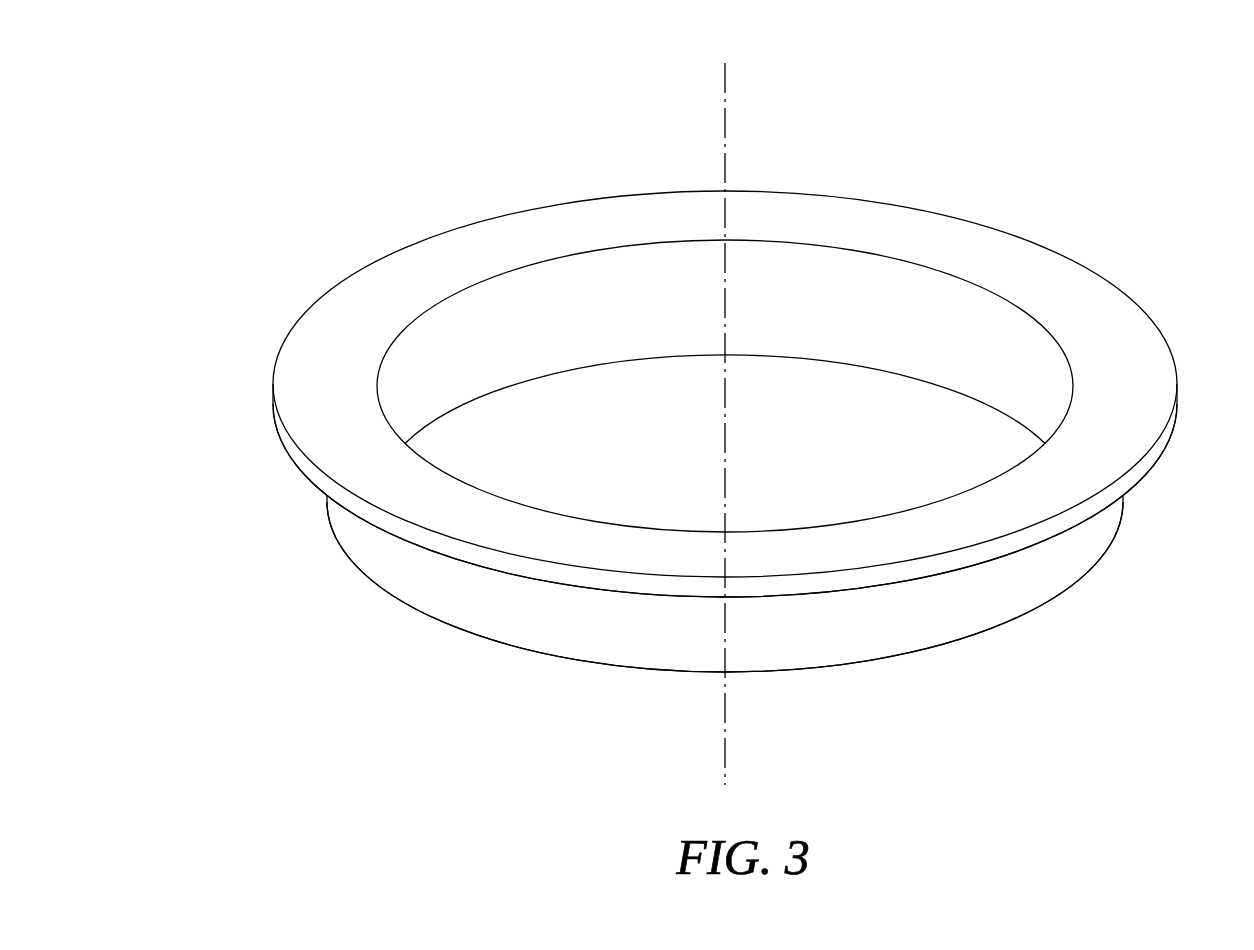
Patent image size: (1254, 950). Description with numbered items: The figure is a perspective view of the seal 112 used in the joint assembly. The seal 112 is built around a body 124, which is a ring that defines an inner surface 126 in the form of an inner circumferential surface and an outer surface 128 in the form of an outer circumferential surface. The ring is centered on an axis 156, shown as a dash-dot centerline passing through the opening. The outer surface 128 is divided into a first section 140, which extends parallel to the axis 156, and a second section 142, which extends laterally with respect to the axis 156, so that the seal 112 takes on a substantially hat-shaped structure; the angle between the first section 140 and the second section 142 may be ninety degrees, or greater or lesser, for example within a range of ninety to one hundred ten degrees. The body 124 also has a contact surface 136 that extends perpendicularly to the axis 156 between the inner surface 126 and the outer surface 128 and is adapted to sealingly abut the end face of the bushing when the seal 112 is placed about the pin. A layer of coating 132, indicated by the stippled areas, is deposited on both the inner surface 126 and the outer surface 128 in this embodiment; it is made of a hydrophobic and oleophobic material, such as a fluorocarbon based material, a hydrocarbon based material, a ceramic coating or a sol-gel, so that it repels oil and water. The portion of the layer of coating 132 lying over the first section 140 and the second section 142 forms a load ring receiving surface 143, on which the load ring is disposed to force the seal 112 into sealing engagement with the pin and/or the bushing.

The seal 112 is at (700, 403).
The body 124 is at (445, 265).
The inner surface 126 is at (847, 315).
The outer surface 128 is at (1037, 572).
The layer of coating 132 is at (982, 327).
The contact surface 136 is at (1065, 300).
The first section 140 is at (505, 620).
The second section 142 is at (312, 489).
The load ring receiving surface 143 is at (985, 595).
The axis 156 is at (725, 88).